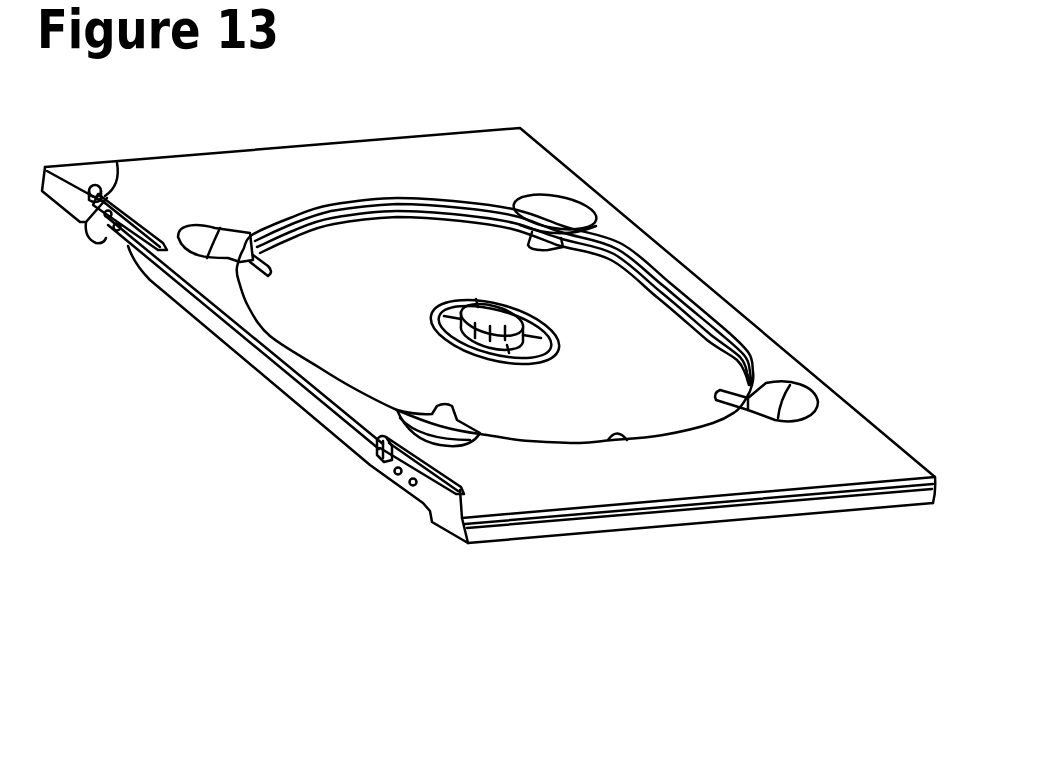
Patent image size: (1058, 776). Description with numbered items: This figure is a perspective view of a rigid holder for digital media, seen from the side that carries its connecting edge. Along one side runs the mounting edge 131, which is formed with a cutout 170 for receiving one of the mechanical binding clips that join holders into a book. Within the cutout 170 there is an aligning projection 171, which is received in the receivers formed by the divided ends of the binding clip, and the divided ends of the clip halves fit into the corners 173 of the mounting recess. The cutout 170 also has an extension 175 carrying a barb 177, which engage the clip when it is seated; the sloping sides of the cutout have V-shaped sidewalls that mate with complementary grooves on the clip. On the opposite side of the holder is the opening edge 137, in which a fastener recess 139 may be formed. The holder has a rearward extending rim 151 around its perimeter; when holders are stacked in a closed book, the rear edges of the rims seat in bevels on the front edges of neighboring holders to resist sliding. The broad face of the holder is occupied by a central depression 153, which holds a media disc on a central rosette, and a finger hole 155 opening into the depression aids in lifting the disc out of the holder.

The mounting edge 131 is at (214, 339).
The opening edge 137 is at (670, 268).
The fastener recess 139 is at (738, 326).
The rearward extending rim 151 is at (284, 383).
The central depression 153 is at (621, 439).
The finger hole 155 is at (785, 420).
The cutout 170 is at (388, 471).
The aligning projection 171 is at (101, 194).
The corner 173 is at (160, 239).
The extension 175 is at (407, 474).
The barb 177 is at (110, 228).